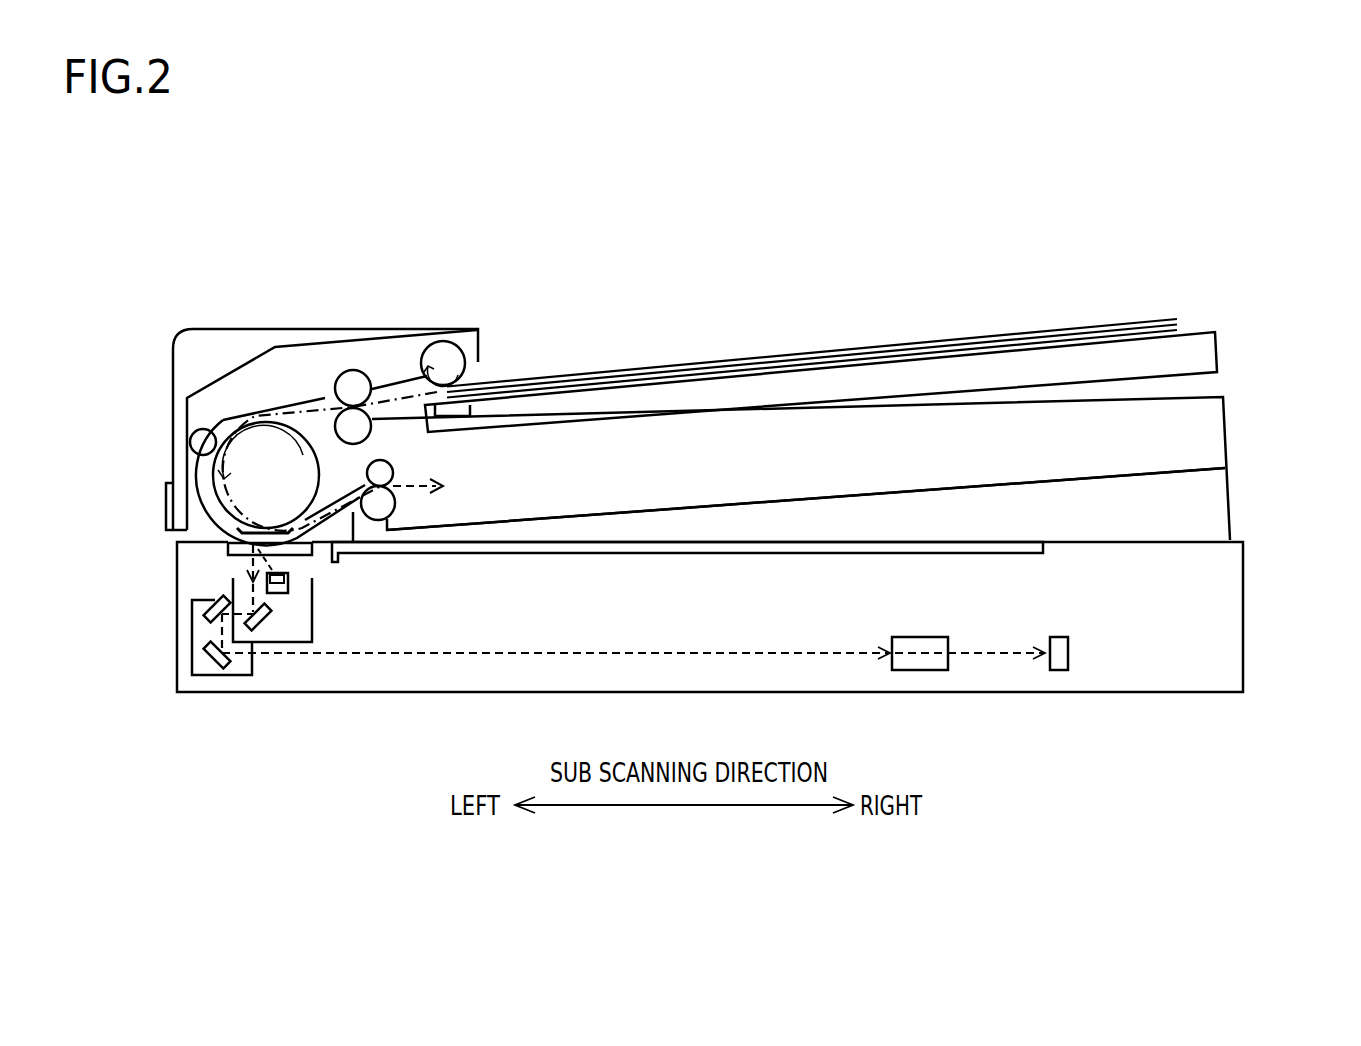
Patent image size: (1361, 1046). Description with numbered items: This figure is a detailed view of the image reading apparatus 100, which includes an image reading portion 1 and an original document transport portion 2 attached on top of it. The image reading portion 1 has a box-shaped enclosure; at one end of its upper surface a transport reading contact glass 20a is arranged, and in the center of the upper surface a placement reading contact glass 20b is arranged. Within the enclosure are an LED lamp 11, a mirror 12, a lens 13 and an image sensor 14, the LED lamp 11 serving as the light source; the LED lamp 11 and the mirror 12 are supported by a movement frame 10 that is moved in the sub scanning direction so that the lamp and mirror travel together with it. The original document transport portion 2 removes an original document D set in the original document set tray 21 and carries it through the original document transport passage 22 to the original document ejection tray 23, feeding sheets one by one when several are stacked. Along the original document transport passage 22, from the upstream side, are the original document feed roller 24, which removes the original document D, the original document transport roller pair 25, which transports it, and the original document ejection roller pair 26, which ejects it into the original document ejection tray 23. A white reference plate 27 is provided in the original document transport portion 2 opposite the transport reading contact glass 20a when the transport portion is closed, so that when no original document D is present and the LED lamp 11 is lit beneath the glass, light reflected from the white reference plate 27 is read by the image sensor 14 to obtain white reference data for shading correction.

The image reading portion 1 is at (1243, 635).
The original document transport portion 2 is at (1228, 466).
The movement frame 10 is at (232, 677).
The LED lamp 11 is at (287, 590).
The mirror 12 is at (213, 600).
The lens 13 is at (920, 665).
The image sensor 14 is at (1059, 665).
The transport reading contact glass 20a is at (292, 553).
The placement reading contact glass 20b is at (773, 553).
The original document set tray 21 is at (1196, 345).
The original document transport passage 22 is at (222, 420).
The original document ejection tray 23 is at (668, 508).
The original document feed roller 24 is at (460, 353).
The original document transport roller pair 25 is at (353, 372).
The original document ejection roller pair 26 is at (392, 503).
The white reference plate 27 is at (267, 530).
The image reading apparatus 100 is at (1277, 423).
The original document D is at (887, 343).